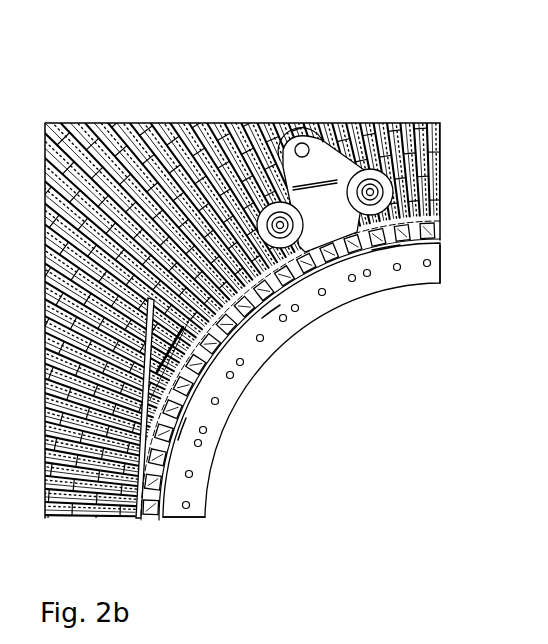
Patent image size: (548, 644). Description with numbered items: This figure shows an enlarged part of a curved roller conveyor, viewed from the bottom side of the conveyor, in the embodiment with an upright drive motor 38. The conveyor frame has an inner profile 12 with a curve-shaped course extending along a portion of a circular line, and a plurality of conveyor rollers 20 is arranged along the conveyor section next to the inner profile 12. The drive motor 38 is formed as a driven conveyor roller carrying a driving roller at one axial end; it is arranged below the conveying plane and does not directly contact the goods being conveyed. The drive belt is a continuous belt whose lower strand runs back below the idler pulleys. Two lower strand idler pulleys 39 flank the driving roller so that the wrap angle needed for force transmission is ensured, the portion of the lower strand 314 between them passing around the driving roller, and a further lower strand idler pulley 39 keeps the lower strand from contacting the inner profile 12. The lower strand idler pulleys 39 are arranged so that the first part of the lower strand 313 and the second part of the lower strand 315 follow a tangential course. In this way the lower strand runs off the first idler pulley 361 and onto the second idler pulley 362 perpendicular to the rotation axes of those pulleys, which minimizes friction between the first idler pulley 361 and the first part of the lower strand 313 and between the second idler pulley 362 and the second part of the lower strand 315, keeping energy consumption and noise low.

The conveyor rollers 20 is at (167, 123).
The lower strand idler pulley 39 is at (253, 127).
The drive motor 38 is at (327, 127).
The inner profile 12 is at (177, 508).
The first idler pulley 361 is at (425, 250).
The second idler pulley 362 is at (173, 497).
The first part of the lower strand 313 is at (387, 253).
The guide track 314 is at (270, 302).
The second part of the lower strand 315 is at (190, 423).